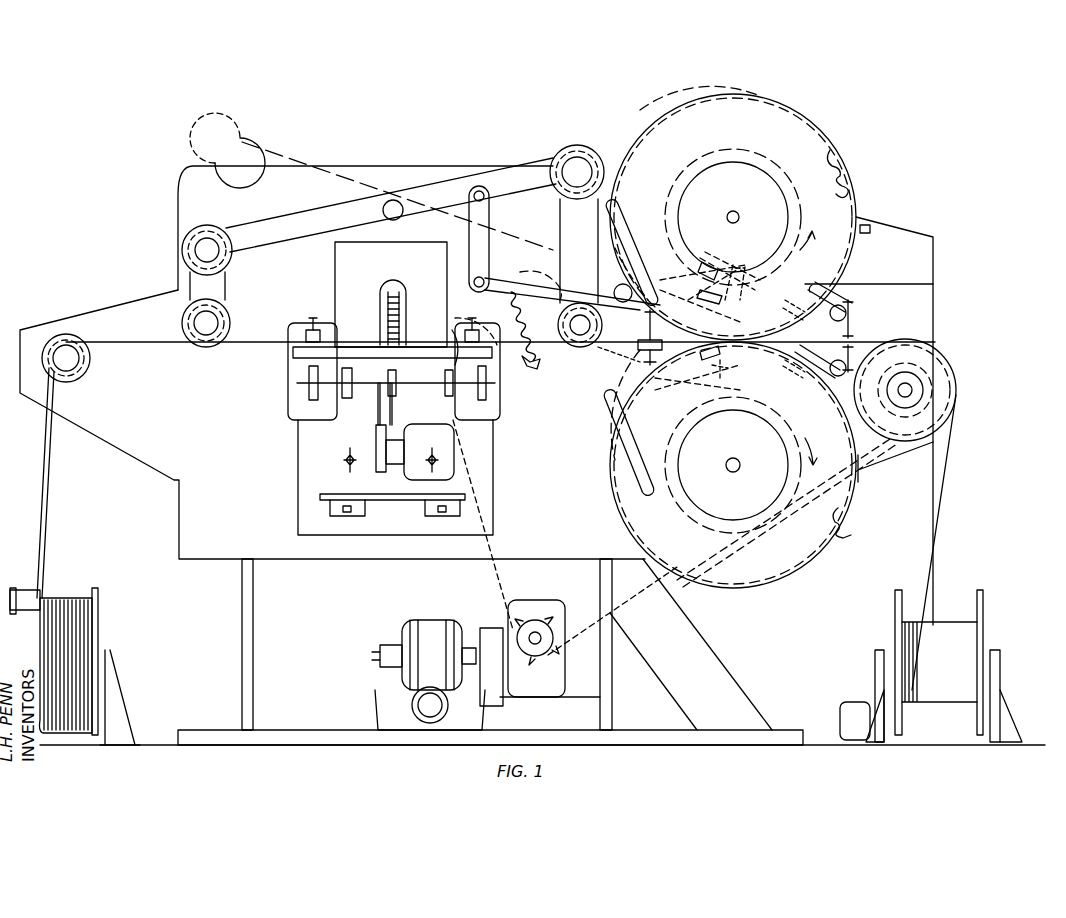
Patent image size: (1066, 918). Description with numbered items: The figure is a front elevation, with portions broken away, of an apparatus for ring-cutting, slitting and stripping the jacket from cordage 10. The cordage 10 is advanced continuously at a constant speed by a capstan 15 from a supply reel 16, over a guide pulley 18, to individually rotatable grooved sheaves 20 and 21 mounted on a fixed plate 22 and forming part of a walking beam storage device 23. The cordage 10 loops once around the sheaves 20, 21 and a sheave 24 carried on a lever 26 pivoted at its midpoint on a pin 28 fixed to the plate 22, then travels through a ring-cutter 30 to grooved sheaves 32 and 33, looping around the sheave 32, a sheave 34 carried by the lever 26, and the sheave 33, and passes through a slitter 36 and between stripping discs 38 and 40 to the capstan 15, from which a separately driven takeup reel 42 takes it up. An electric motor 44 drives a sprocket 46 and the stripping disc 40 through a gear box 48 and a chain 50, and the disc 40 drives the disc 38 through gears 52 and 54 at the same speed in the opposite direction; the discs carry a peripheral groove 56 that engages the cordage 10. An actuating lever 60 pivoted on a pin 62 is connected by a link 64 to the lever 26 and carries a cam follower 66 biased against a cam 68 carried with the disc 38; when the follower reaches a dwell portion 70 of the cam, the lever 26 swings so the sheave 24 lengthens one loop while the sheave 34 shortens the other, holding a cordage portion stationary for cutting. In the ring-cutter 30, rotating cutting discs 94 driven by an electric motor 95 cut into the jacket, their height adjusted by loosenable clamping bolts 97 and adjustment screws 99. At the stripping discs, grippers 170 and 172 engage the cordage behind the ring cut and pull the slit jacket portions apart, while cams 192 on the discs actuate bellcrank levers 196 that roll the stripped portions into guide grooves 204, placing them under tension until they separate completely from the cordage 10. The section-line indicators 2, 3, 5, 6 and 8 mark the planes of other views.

The section line 2- 2 is at (374, 335).
The section line 3- 3 is at (752, 296).
The section line 5- 5 is at (624, 332).
The section line 6- 6 is at (182, 101).
The section line 8- 8 is at (868, 85).
The cordage 10 is at (46, 470).
The capstan 15 is at (918, 346).
The supply reel 16 is at (98, 593).
The guide pulley 18 is at (91, 358).
The grooved sheave 20 is at (231, 322).
The grooved sheave 21 is at (183, 322).
The fixed plate 22 is at (178, 203).
The walking beam storage device 23 is at (446, 170).
The sheave 24 is at (207, 226).
The lever 26 is at (302, 182).
The pin 28 is at (394, 200).
The ring-cutter 30 is at (287, 443).
The grooved sheave 32 is at (591, 350).
The grooved sheave 33 is at (560, 345).
The grooved sheave 34 is at (574, 150).
The slitter 36 is at (629, 373).
The stripping disc 38 is at (815, 125).
The stripping disc 40 is at (770, 580).
The takeup reel 42 is at (895, 612).
The electric motor 44 is at (403, 622).
The sprocket 46 is at (495, 380).
The gear box 48 is at (545, 600).
The chain 50 is at (626, 605).
The gear 52 is at (842, 162).
The gear 54 is at (850, 522).
The peripheral groove 56 is at (700, 95).
The actuating lever 60 is at (536, 276).
The pin 62 is at (624, 283).
The link 64 is at (490, 212).
The cam follower 66 is at (736, 264).
The cam 68 is at (678, 194).
The dwell portion 70 is at (688, 229).
The gripper 170 is at (742, 310).
The gripper 172 is at (727, 360).
The cam 192 is at (700, 280).
The bellcrank lever 196 is at (836, 300).
The guide groove 204 is at (636, 240).
The cutting disc 94 is at (299, 408).
The electric motor 95 is at (414, 430).
The clamping bolt 97 is at (348, 460).
The adjustment screw 99 is at (430, 512).